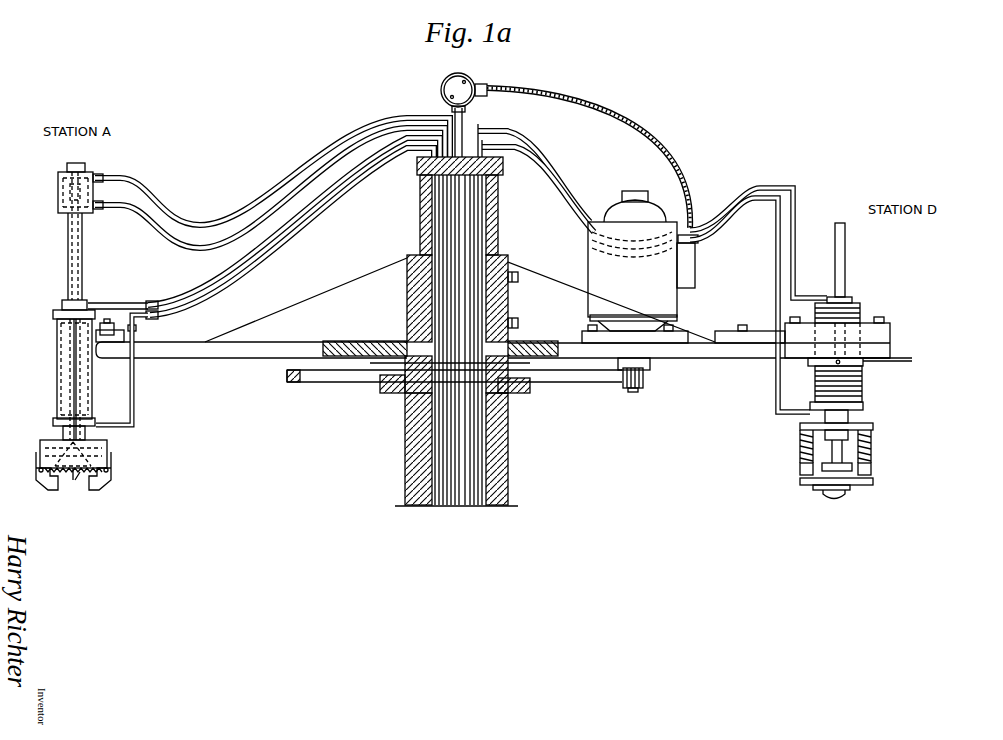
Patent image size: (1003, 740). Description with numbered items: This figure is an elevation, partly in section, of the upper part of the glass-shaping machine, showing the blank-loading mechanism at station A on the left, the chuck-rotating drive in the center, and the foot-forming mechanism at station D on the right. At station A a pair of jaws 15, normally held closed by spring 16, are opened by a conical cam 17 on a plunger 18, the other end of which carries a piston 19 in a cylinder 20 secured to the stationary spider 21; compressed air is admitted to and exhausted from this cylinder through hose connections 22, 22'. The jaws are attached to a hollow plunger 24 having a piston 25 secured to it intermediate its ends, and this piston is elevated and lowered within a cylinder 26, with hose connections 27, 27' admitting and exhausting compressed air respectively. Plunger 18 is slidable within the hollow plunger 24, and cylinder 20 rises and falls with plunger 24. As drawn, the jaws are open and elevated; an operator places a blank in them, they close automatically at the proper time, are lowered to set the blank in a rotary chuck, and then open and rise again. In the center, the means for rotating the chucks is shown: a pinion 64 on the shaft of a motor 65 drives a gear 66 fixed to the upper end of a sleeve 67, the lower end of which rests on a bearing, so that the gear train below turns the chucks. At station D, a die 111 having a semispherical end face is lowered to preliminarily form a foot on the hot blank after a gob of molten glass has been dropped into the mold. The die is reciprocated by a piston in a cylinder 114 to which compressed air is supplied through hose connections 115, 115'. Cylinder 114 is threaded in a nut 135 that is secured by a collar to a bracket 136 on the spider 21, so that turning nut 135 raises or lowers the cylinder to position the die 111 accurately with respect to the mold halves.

The jaws 15 is at (42, 485).
The spring 16 is at (76, 482).
The conical cam 17 is at (108, 447).
The plunger 18 is at (68, 368).
The piston 19 is at (66, 183).
The cylinder 20 is at (58, 207).
The stationary spider 21 is at (194, 350).
The hose connection 22 is at (272, 171).
The hose connection 22' is at (270, 194).
The hollow plunger 24 is at (82, 400).
The piston 25 is at (56, 325).
The cylinder 26 is at (92, 367).
The hose connection 27 is at (264, 223).
The hose connection 27' is at (290, 233).
The pinion 64 is at (645, 383).
The motor 65 is at (672, 302).
The gear 66 is at (567, 382).
The sleeve 67 is at (509, 462).
The die 111 is at (828, 497).
The cylinder 114 is at (862, 389).
The hose connection 115 is at (750, 305).
The hose connection 115' is at (768, 243).
The nut 135 is at (808, 365).
The bracket 136 is at (862, 322).